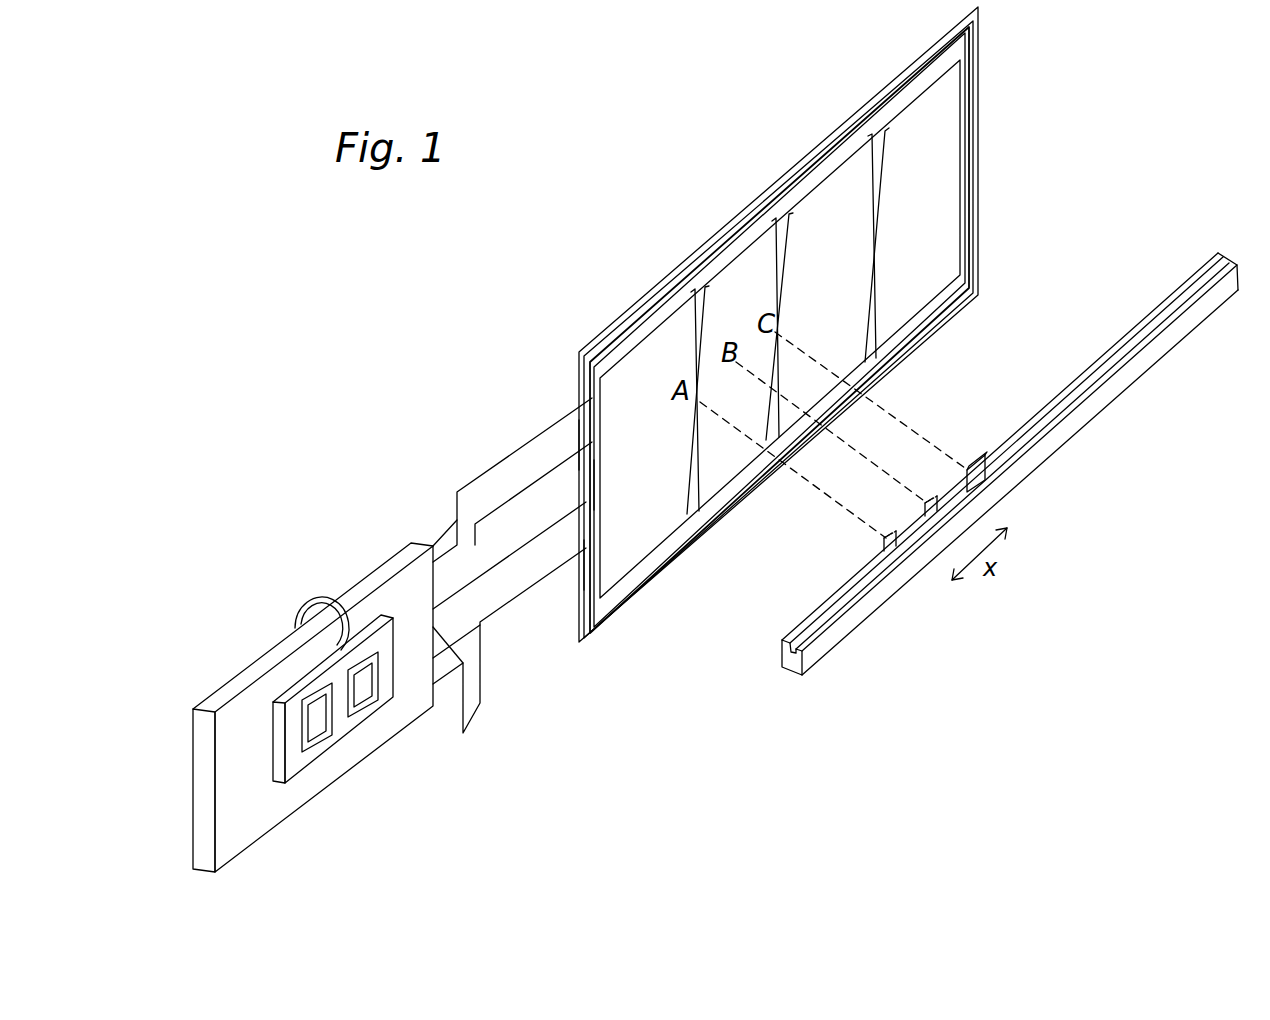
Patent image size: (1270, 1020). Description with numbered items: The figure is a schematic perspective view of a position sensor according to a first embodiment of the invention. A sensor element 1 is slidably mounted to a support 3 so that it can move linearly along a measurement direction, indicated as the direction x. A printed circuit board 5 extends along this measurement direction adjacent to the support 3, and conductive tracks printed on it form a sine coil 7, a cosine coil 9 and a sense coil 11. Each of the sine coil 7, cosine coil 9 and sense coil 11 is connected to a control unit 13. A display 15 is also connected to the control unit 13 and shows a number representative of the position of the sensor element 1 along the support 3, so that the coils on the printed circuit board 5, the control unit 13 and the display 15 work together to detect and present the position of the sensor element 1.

The sensor element 1 is at (988, 478).
The support 3 is at (1124, 335).
The printed circuit board 5 is at (839, 129).
The sine coil 7 is at (578, 456).
The cosine coil 9 is at (592, 490).
The sense coil 11 is at (581, 562).
The control unit 13 is at (237, 687).
The display 15 is at (352, 740).